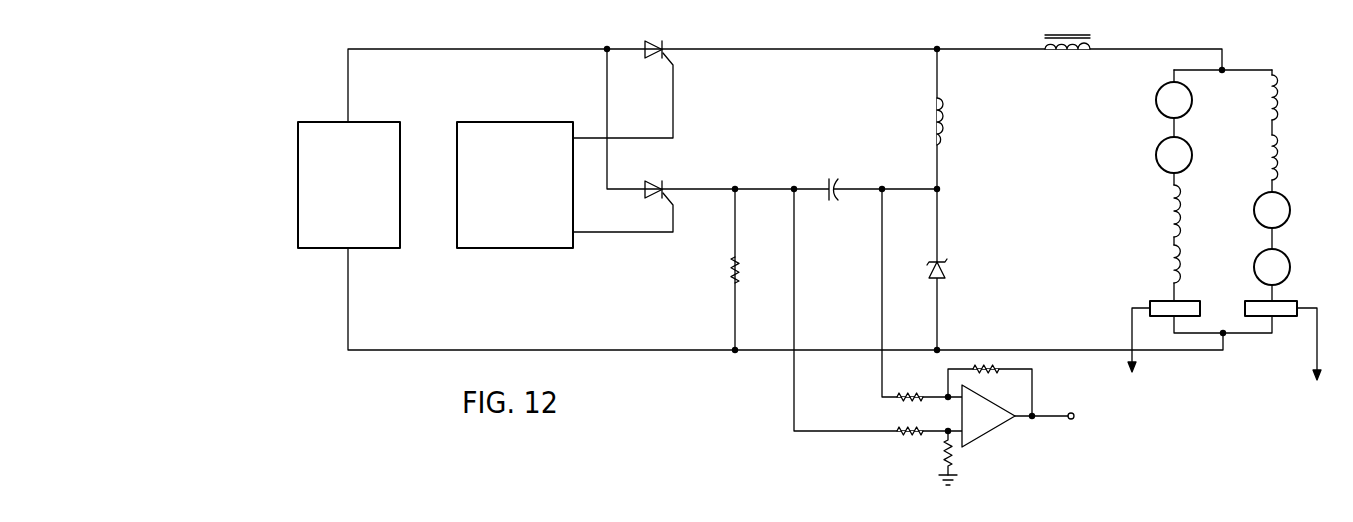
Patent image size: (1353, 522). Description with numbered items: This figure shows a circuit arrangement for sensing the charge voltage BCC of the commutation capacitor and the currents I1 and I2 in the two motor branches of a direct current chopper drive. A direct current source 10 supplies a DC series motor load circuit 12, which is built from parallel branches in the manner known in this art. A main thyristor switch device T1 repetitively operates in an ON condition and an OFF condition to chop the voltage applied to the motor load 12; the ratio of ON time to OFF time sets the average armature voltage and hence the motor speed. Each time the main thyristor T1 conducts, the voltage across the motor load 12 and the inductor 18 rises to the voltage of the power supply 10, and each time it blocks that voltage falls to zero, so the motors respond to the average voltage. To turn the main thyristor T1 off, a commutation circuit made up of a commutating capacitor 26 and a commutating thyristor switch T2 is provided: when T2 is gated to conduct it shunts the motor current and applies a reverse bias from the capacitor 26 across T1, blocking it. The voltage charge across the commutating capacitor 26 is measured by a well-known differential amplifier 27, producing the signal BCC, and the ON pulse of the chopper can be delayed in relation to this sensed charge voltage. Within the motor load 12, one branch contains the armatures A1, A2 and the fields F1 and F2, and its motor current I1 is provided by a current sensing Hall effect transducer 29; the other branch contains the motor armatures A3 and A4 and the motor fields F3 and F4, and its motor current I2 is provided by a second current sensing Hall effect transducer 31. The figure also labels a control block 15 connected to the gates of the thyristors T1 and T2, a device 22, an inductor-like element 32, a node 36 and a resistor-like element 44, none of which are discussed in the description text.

The direct current source 10 is at (385, 122).
The DC series motor load circuit 12 is at (1231, 187).
The conduction control apparatus 15 is at (522, 249).
The inductor 18 is at (1073, 54).
The zener diode 22 is at (947, 268).
The commutating capacitor 26 is at (836, 178).
The differential amplifier 27 is at (986, 436).
The current sensing Hall effect transducer 29 is at (1152, 300).
The current sensing Hall effect transducer 31 is at (1253, 300).
The inductor 32 is at (944, 120).
The junction node 36 is at (936, 46).
The resistor 44 is at (731, 275).
The main thyristor switch device T1 is at (649, 42).
The commutating thyristor switch T2 is at (649, 182).
The armature A1 is at (1156, 100).
The armature A2 is at (1156, 154).
The motor armature A3 is at (1289, 208).
The motor armature A4 is at (1289, 264).
The field F1 is at (1173, 210).
The field F2 is at (1173, 267).
The motor field F3 is at (1281, 97).
The motor field F4 is at (1281, 152).
The motor current I1 is at (1130, 390).
The motor current I2 is at (1318, 398).
The charge voltage of the commutation capacitor BCC is at (1096, 423).